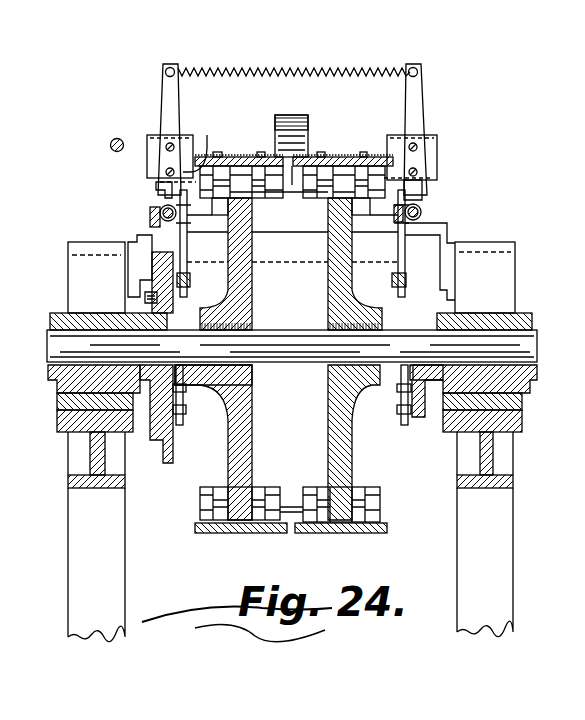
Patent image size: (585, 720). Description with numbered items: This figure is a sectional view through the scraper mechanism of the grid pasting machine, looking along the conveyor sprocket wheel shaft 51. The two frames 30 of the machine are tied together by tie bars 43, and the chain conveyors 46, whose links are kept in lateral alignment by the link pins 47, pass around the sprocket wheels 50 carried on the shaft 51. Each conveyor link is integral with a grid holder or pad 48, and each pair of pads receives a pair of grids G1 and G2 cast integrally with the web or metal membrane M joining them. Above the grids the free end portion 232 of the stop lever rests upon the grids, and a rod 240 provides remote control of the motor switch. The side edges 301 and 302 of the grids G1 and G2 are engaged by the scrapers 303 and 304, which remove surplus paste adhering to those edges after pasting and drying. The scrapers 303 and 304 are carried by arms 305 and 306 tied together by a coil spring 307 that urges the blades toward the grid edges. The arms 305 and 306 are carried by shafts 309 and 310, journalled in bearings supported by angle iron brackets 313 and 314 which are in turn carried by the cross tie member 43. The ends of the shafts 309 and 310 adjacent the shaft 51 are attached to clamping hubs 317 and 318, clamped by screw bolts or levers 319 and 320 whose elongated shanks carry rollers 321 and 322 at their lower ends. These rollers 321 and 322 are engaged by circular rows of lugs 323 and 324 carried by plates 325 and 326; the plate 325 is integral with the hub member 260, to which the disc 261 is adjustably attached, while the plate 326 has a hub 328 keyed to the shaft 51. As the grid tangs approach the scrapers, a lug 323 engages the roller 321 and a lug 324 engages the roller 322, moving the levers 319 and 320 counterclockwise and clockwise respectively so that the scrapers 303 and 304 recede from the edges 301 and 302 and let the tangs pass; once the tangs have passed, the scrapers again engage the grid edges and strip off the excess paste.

The frames 30 is at (68, 481).
The tie bars 43 is at (287, 262).
The chain conveyors 46 is at (290, 522).
The link pins 47 is at (290, 205).
The grid holder or pad 48 is at (270, 157).
The sprocket wheels 50 is at (252, 445).
The shaft 51 is at (278, 340).
The free end portion 232 is at (293, 117).
The rod 240 is at (110, 147).
The hub member 260 is at (205, 370).
The disc 261 is at (170, 458).
The side edge 301 is at (208, 155).
The side edge 302 is at (380, 154).
The scraper 303 is at (188, 153).
The scraper 304 is at (393, 153).
The arm 305 is at (158, 76).
The arm 306 is at (417, 87).
The coil spring 307 is at (285, 69).
The shaft 309 is at (160, 211).
The shaft 310 is at (421, 212).
The angle iron bracket 313 is at (150, 228).
The angle iron bracket 314 is at (440, 223).
The clamping hub 317 is at (157, 190).
The clamping hub 318 is at (413, 200).
The screw bolt or lever 319 is at (187, 251).
The screw bolt or lever 320 is at (398, 252).
The roller 321 is at (190, 281).
The roller 322 is at (392, 281).
The lugs 323 is at (186, 411).
The lugs 324 is at (398, 412).
The plate 325 is at (183, 391).
The plate 326 is at (399, 391).
The hub 328 is at (426, 385).
The grid G1 is at (242, 153).
The grid G2 is at (337, 153).
The web or metal membrane M is at (312, 137).